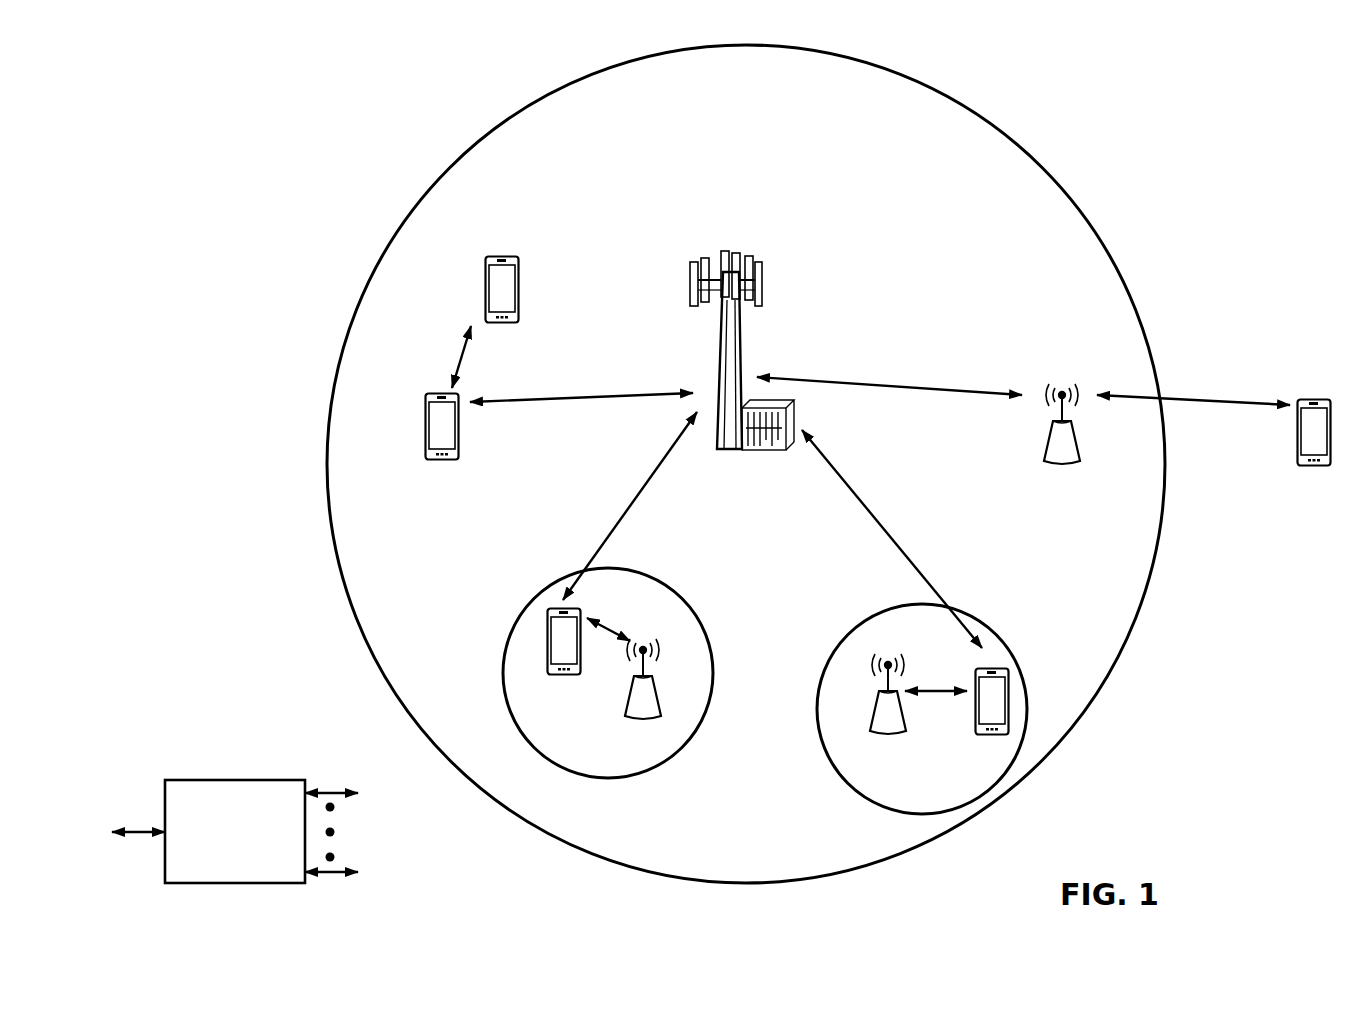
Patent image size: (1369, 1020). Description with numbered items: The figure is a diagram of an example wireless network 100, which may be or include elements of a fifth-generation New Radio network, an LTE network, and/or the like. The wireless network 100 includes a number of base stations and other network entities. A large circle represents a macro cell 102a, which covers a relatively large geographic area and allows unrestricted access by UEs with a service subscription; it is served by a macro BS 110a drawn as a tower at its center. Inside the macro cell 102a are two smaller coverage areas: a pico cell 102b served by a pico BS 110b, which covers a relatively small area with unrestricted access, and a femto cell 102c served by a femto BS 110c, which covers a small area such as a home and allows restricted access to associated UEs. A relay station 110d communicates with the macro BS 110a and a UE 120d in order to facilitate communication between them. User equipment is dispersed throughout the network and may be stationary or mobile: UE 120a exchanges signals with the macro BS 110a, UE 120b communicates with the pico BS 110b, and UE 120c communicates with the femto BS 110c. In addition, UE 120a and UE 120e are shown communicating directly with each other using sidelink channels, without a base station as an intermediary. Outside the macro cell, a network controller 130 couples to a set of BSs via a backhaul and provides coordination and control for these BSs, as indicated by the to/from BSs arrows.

The wireless network 100 is at (222, 43).
The macro cell 102a is at (1029, 148).
The pico cell 102b is at (701, 614).
The femto cell 102c is at (858, 625).
The macro BS 110a is at (740, 246).
The pico BS 110b is at (664, 706).
The femto BS 110c is at (874, 722).
The relay station 110d is at (1066, 385).
The UE 120a is at (424, 410).
The UE 120b is at (551, 675).
The UE 120c is at (972, 736).
The UE 120d is at (1331, 397).
The UE 120e is at (485, 278).
The network controller 130 is at (235, 779).